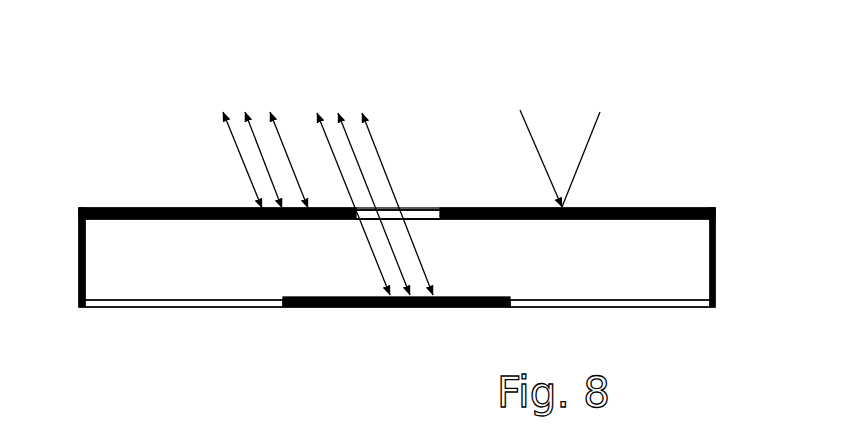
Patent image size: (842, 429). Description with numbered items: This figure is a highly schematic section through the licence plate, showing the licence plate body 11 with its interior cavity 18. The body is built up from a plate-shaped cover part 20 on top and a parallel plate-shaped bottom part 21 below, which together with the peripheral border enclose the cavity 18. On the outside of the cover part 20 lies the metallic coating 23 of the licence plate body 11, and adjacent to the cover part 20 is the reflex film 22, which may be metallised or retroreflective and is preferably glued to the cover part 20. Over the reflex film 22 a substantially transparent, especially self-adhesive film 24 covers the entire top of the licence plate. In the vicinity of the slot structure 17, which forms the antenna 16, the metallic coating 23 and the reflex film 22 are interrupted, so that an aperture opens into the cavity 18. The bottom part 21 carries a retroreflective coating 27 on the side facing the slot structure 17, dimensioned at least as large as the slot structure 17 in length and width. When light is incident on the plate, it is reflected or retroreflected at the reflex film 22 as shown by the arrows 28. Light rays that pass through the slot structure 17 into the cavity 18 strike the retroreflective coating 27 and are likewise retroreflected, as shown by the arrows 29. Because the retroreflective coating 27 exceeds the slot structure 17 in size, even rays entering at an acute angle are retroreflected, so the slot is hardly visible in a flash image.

The licence plate body 11 is at (120, 306).
The antenna 16 is at (415, 213).
The slot structure 17 is at (415, 213).
The cavity 18 is at (208, 288).
The cover part 20 is at (113, 208).
The bottom part 21 is at (260, 306).
The reflex film 22 is at (696, 210).
The metallic coating 23 is at (687, 308).
The film 24 is at (610, 210).
The retroreflective coating 27 is at (462, 306).
The arrows 28 is at (233, 105).
The arrows 29 is at (335, 100).